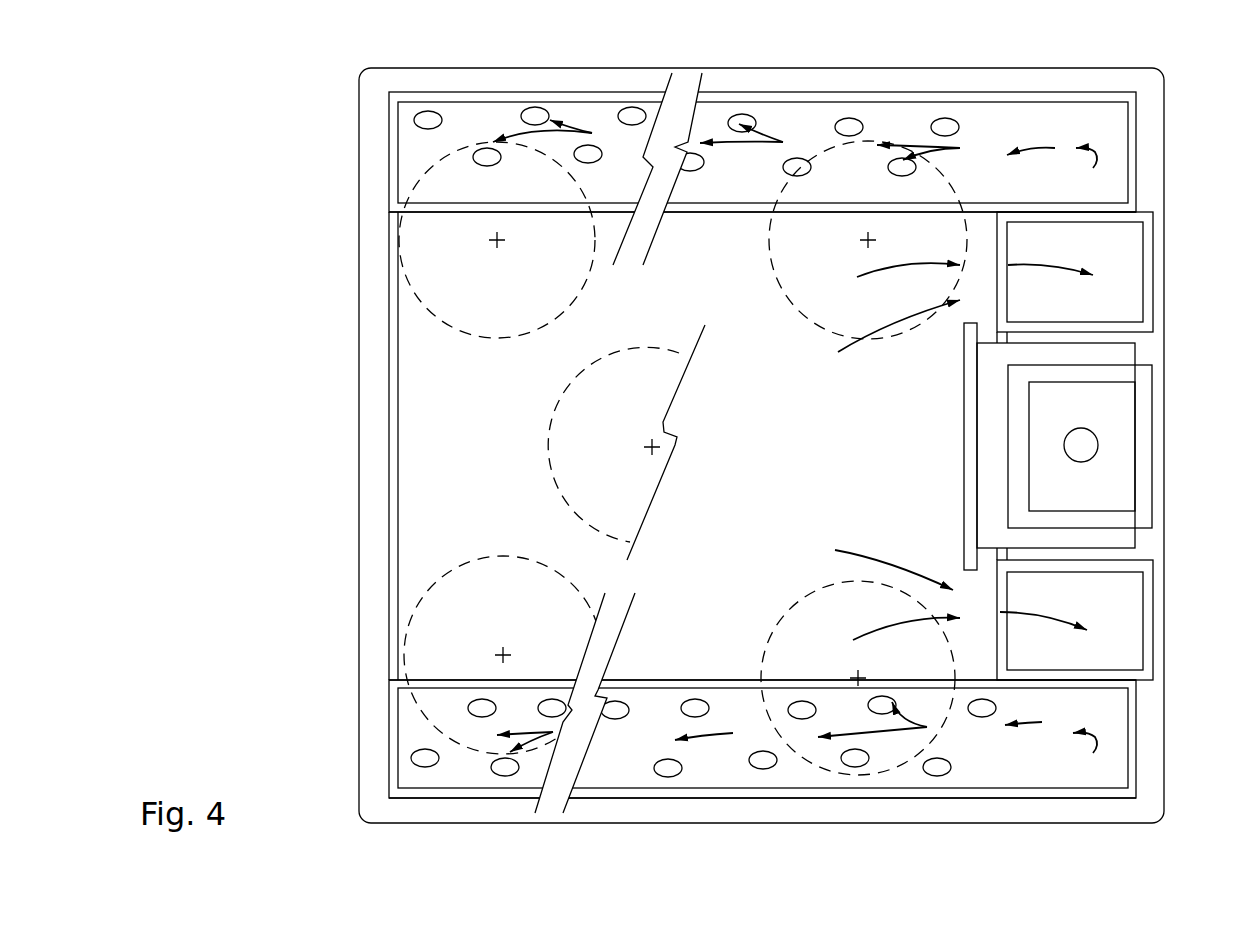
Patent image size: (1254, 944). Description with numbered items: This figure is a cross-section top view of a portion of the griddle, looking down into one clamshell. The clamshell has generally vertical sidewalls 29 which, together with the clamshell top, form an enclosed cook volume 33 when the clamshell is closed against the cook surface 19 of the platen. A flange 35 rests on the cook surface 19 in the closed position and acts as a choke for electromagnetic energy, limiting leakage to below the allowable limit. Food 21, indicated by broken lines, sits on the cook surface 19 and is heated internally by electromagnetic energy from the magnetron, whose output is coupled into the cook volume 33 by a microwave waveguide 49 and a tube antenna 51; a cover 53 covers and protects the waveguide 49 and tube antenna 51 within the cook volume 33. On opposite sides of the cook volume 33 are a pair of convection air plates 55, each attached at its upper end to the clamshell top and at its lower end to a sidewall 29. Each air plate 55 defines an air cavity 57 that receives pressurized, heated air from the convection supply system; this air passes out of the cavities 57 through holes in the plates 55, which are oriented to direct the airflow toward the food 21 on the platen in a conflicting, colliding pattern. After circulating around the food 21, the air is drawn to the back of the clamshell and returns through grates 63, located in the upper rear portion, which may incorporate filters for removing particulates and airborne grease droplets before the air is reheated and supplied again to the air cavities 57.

The cook surface 19 is at (420, 418).
The food 21 is at (440, 286).
The sidewalls 29 is at (960, 790).
The cook volume 33 is at (437, 488).
The flange 35 is at (372, 797).
The microwave waveguide 49 is at (1135, 540).
The tube antenna 51 is at (1098, 440).
The cover 53 is at (964, 475).
The convection air plates 55 is at (703, 213).
The air cavity 57 is at (1078, 115).
The grates 63 is at (1060, 300).